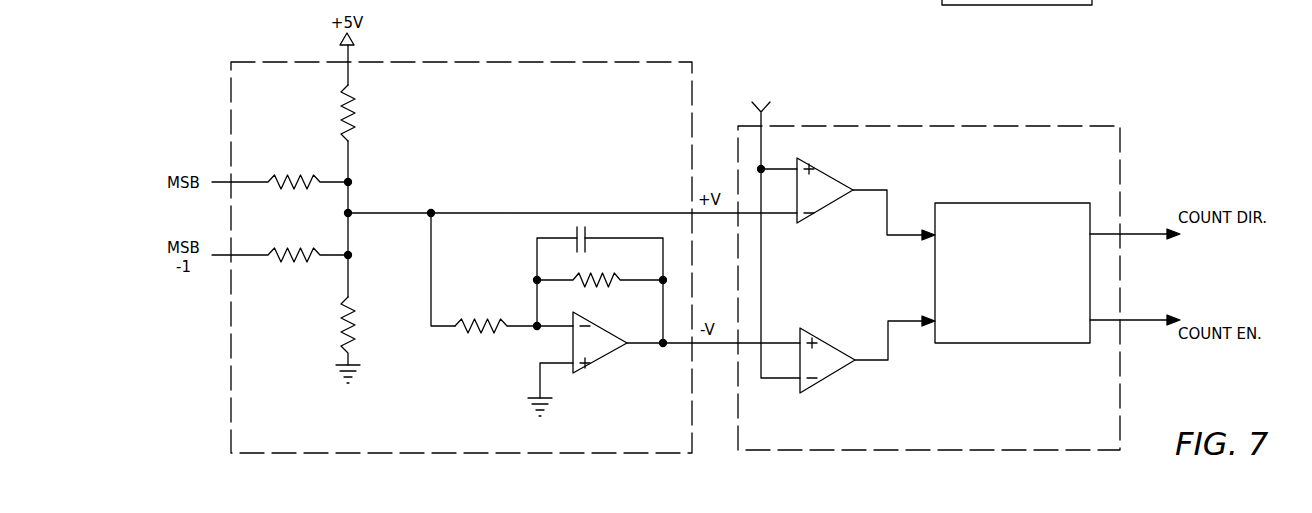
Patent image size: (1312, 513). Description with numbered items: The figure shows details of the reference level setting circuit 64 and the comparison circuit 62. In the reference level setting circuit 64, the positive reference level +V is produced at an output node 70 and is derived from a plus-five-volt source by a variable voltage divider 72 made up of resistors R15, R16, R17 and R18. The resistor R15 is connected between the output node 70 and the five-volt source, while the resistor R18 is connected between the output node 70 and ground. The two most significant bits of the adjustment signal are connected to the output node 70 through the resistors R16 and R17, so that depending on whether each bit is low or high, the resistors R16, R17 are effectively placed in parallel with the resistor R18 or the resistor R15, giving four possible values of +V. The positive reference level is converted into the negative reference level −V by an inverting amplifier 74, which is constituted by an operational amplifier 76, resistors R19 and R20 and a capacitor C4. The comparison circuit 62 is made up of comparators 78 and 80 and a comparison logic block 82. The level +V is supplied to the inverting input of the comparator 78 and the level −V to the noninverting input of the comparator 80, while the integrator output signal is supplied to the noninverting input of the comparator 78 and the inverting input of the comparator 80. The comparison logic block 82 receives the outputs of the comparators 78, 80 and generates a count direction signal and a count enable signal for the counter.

The comparison circuit 62 is at (959, 273).
The reference level setting circuit 64 is at (500, 61).
The output node 70 is at (431, 212).
The variable voltage divider 72 is at (318, 198).
The inverting amplifier 74 is at (615, 314).
The operational amplifier 76 is at (602, 360).
The comparator 78 is at (830, 168).
The comparator 80 is at (827, 338).
The comparison logic block 82 is at (1013, 203).
The resistor R15 is at (352, 111).
The resistor R16 is at (300, 170).
The resistor R17 is at (300, 265).
The resistor R18 is at (354, 337).
The resistor R19 is at (484, 316).
The resistor R20 is at (598, 273).
The capacitor C4 is at (575, 230).